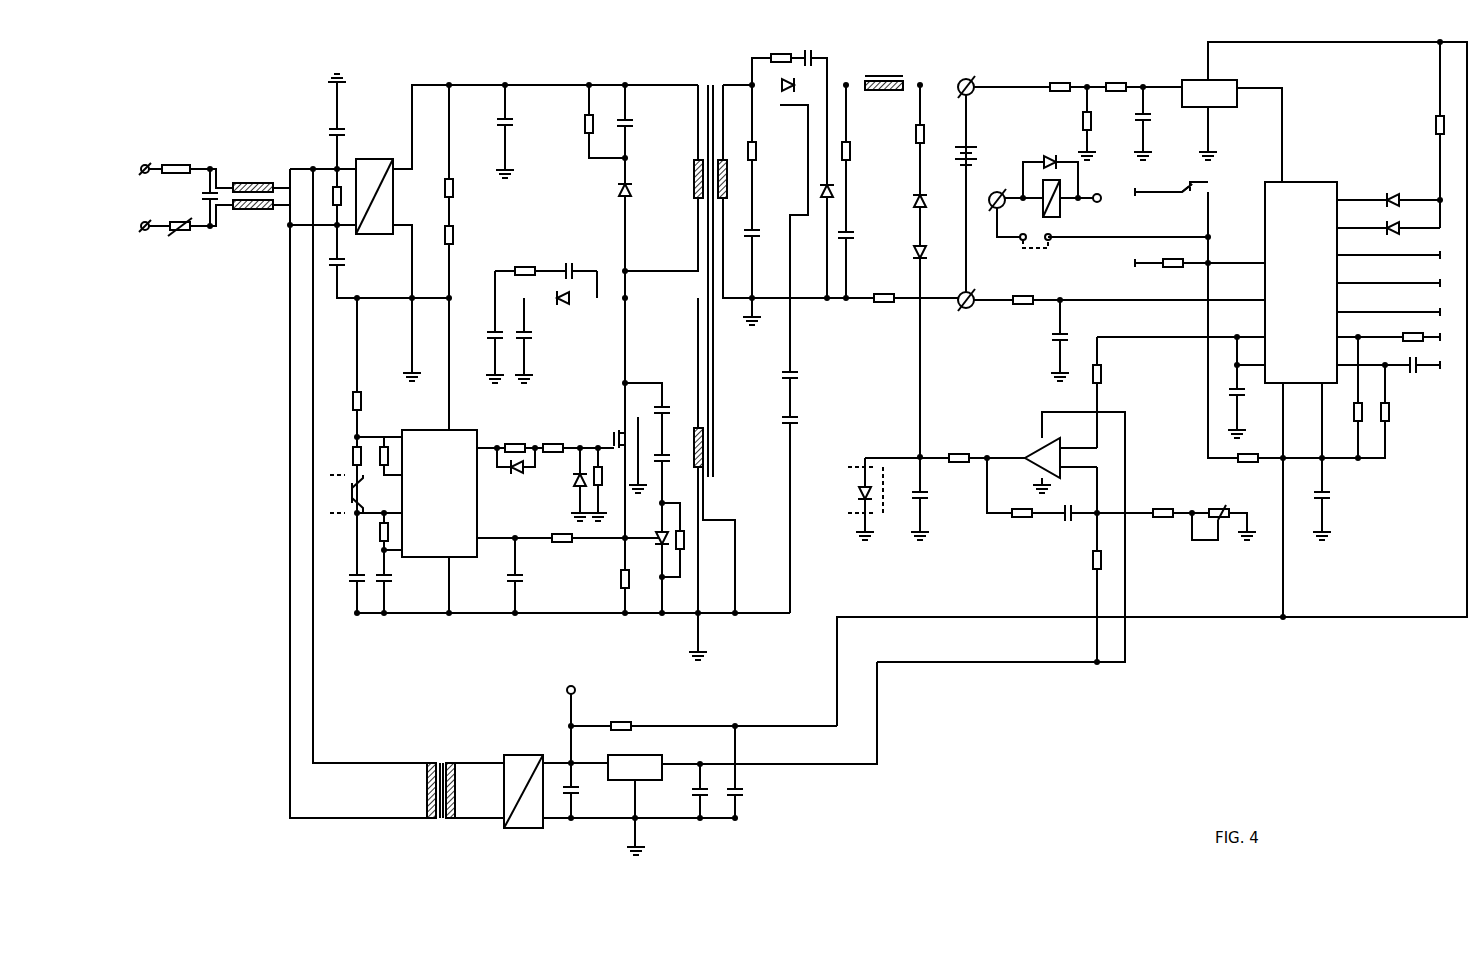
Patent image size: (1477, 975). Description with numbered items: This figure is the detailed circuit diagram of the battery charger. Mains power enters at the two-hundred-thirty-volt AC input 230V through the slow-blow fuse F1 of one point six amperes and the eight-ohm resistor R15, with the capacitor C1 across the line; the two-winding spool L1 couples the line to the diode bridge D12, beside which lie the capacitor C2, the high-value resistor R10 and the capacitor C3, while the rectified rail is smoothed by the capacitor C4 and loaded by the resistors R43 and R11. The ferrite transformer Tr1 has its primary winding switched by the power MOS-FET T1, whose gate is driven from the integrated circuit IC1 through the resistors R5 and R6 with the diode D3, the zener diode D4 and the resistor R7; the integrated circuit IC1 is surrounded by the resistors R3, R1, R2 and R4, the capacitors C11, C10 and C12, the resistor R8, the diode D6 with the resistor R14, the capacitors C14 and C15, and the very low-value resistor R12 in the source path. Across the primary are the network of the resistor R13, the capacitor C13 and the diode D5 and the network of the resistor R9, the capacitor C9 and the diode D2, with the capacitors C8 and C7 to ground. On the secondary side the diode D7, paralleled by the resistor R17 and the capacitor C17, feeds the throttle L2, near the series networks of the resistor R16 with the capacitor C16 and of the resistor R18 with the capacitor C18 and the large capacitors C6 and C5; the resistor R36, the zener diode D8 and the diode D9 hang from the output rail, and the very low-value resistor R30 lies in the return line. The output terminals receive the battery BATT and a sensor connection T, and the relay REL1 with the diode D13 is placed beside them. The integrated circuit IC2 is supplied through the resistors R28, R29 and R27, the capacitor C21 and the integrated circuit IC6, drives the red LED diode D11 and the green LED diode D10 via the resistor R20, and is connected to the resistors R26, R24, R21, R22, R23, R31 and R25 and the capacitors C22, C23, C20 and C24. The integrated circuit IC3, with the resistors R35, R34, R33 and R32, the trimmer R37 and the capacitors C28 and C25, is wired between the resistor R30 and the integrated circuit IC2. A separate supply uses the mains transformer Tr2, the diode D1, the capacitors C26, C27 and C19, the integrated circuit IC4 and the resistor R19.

The 230V AC mains input 230V is at (136, 197).
The fuse F1 is at (176, 159).
The resistor R15 is at (178, 234).
The capacitor C1 is at (198, 196).
The spool L1 is at (253, 186).
The capacitor C2 is at (322, 134).
The resistor R10 is at (327, 195).
The diode D12 is at (374, 186).
The capacitor C3 is at (347, 263).
The resistor R43 is at (465, 188).
The resistor R11 is at (465, 235).
The capacitor C4 is at (493, 124).
The resistor R13 is at (572, 124).
The capacitor C13 is at (640, 124).
The diode D5 is at (636, 192).
The resistor R9 is at (522, 261).
The capacitor C9 is at (567, 263).
The diode D2 is at (563, 307).
The capacitor C8 is at (484, 335).
The capacitor C7 is at (533, 335).
The transformer Tr1 is at (710, 265).
The resistor R17 is at (780, 49).
The capacitor C17 is at (812, 51).
The diode D7 is at (801, 140).
The resistor R16 is at (769, 152).
The capacitor C16 is at (756, 235).
The resistor R18 is at (863, 152).
The capacitor C18 is at (861, 237).
The throttle L2 is at (884, 74).
The resistor R36 is at (902, 135).
The z-diode D8 is at (906, 202).
The diode D9 is at (906, 253).
The resistor R30 is at (883, 310).
The battery BATT is at (982, 192).
The temperature sensor terminal T is at (1018, 204).
The diode D13 is at (1045, 154).
The relay REL1 is at (1073, 206).
The resistor R28 is at (1058, 77).
The resistor R29 is at (1068, 120).
The resistor R27 is at (1114, 77).
The capacitor C21 is at (1158, 118).
The integrated circuit IC6 is at (1209, 93).
The resistor R20 is at (1420, 125).
The integrated circuit IC2 is at (1301, 282).
The LED diode D11 is at (1393, 191).
The LED diode D10 is at (1393, 238).
The resistor R26 is at (1172, 274).
The resistor R24 is at (1022, 290).
The capacitor C22 is at (1040, 339).
The resistor R21 is at (1412, 328).
The capacitor C23 is at (1412, 376).
The resistor R22 is at (1345, 402).
The resistor R23 is at (1402, 412).
The resistor R31 is at (1114, 374).
The capacitor C20 is at (1252, 393).
The resistor R25 is at (1246, 468).
The capacitor C24 is at (1337, 496).
The integrated circuit IC3 is at (1035, 454).
The resistor R35 is at (956, 448).
The capacitor C28 is at (935, 495).
The resistor R34 is at (1018, 524).
The capacitor C25 is at (1068, 522).
The resistor R33 is at (1158, 524).
The trimmer R37 is at (1218, 502).
The resistor R32 is at (1079, 561).
The resistor R3 is at (369, 402).
The resistor R1 is at (382, 443).
The resistor R2 is at (343, 456).
The resistor R4 is at (382, 533).
The integrated circuit IC1 is at (439, 493).
The capacitor C11 is at (342, 579).
The capacitor C10 is at (399, 579).
The resistor R5 is at (514, 439).
The resistor R6 is at (551, 439).
The diode D3 is at (515, 476).
The z-diode D4 is at (566, 480).
The resistor R7 is at (605, 480).
The power MOS-FET T1 is at (612, 427).
The capacitor C14 is at (675, 406).
The capacitor C15 is at (670, 459).
The diode D6 is at (648, 540).
The resistor R14 is at (695, 548).
The resistor R8 is at (561, 550).
The capacitor C12 is at (530, 579).
The resistor R12 is at (608, 579).
The capacitor C6 is at (801, 375).
The capacitor C5 is at (801, 421).
The transformer Tr2 is at (440, 780).
The diode D1 is at (523, 781).
The resistor R19 is at (621, 717).
The integrated circuit IC4 is at (635, 767).
The capacitor C26 is at (586, 792).
The capacitor C27 is at (683, 792).
The capacitor C19 is at (750, 792).